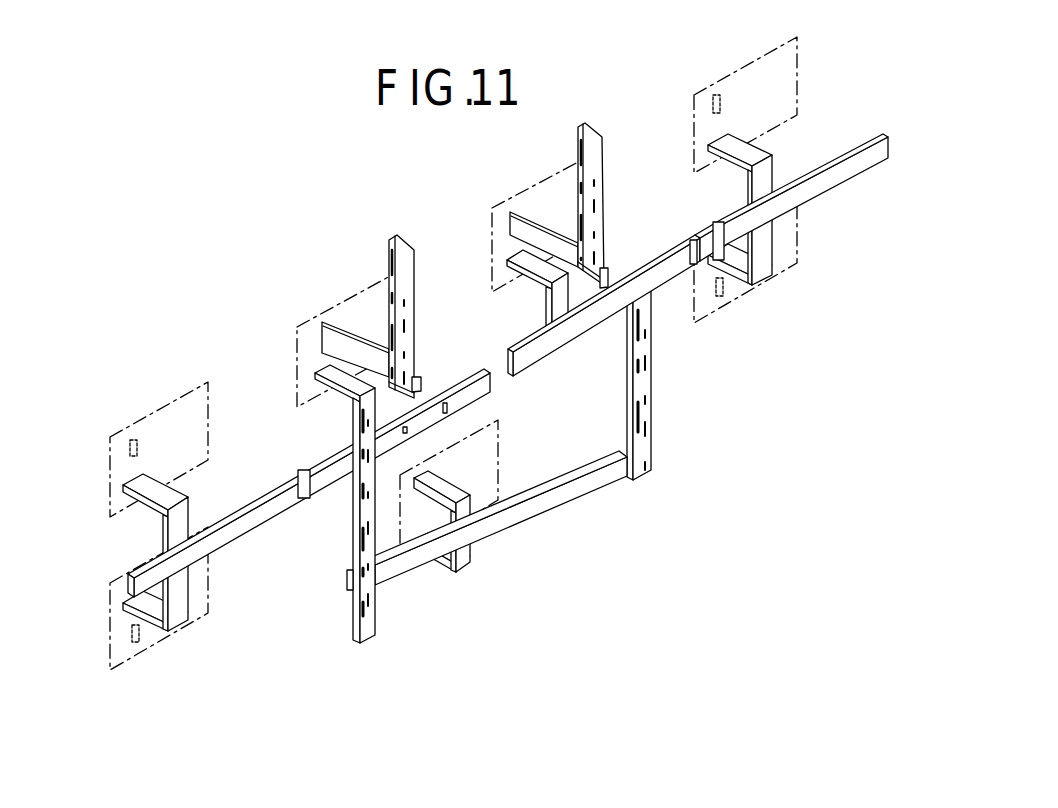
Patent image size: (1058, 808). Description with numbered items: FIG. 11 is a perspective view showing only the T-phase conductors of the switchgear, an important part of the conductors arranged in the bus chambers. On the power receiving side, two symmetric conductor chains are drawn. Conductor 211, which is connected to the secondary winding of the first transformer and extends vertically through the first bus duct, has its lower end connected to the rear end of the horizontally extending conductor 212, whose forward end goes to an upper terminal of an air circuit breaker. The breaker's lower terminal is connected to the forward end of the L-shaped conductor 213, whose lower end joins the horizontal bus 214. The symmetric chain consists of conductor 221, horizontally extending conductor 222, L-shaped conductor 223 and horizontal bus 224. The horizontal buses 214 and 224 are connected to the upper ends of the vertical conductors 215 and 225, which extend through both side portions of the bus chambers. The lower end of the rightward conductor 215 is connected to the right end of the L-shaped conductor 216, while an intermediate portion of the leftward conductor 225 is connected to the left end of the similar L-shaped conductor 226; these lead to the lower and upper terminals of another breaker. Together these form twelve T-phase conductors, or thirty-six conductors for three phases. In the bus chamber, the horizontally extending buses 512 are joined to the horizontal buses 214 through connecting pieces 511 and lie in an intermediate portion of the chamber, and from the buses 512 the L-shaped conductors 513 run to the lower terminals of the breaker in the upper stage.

The conductor 211 is at (592, 125).
The horizontally extending conductor 212 is at (532, 221).
The L-shaped conductor 213 is at (507, 262).
The horizontal bus 214 is at (645, 265).
The conductor 215 is at (653, 430).
The L-shaped conductor 216 is at (571, 500).
The conductor 221 is at (399, 236).
The horizontally extending conductor 222 is at (342, 332).
The L-shaped conductor 223 is at (314, 378).
The horizontal bus 224 is at (460, 381).
The conductor 225 is at (353, 612).
The L-shaped conductor 226 is at (417, 551).
The connecting piece 511 is at (713, 230).
The horizontally extending bus 512 is at (862, 140).
The L-shaped conductor 513 is at (774, 168).